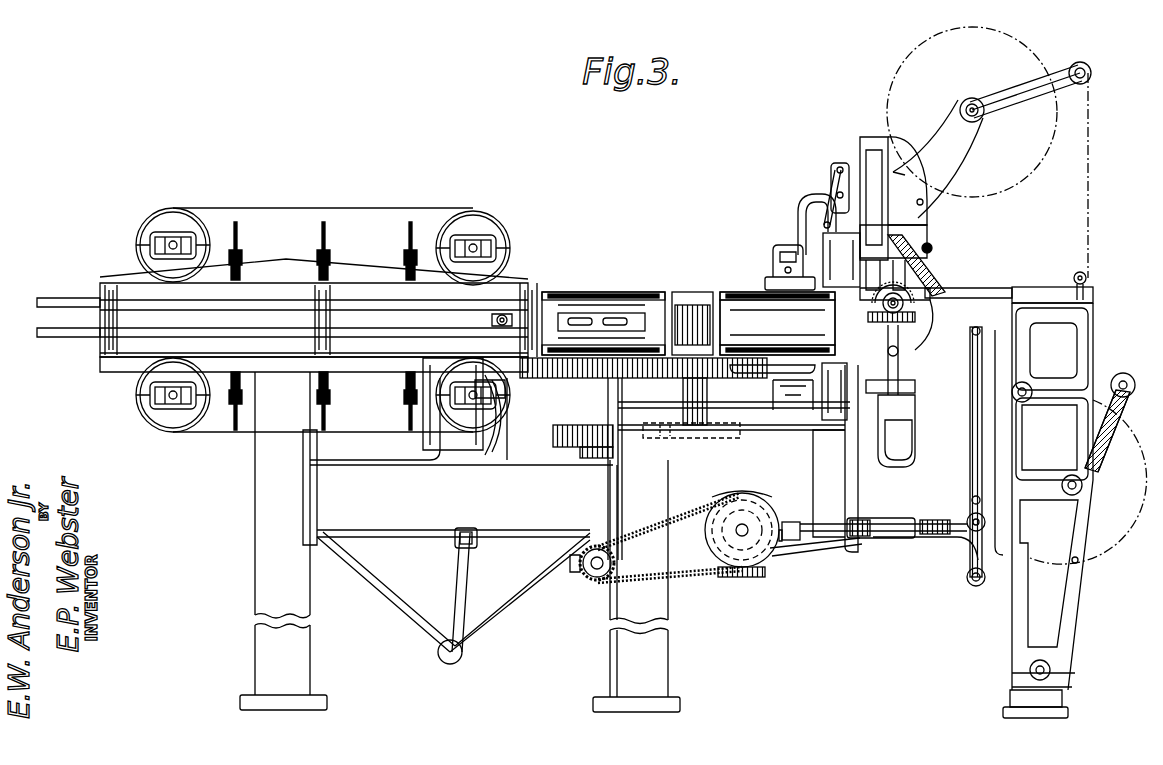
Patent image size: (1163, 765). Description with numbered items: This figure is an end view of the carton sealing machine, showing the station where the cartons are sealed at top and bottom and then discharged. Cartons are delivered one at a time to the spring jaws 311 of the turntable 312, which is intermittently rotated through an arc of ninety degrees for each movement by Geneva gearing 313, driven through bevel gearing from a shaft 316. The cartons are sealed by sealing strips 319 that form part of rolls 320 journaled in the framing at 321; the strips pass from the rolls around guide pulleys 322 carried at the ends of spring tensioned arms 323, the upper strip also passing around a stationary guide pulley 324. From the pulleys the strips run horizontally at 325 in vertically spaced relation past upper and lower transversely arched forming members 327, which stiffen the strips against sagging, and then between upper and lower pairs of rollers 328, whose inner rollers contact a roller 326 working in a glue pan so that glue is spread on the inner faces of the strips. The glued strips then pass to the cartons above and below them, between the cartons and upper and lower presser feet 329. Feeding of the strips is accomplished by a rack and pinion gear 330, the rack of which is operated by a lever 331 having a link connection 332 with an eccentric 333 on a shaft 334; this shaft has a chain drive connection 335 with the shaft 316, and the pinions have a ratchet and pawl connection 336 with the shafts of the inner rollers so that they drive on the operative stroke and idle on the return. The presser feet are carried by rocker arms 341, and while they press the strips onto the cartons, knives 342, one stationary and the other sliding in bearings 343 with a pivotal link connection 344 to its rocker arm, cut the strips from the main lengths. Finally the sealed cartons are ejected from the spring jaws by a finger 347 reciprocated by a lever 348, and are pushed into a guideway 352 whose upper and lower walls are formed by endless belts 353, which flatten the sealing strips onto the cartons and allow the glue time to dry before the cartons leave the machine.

The spring jaws 311 is at (596, 292).
The turntable 312 is at (695, 290).
The Geneva gearing 313 is at (640, 428).
The shaft 316 is at (592, 580).
The sealing strips 319 is at (1088, 172).
The rolls 320 is at (1017, 295).
The journal 321 is at (960, 105).
The guide pulleys 322 is at (1118, 478).
The spring tensioned arms 323 is at (1090, 438).
The stationary guide pulley 324 is at (1076, 273).
The horizontal feed path 325 is at (1012, 285).
The roller 326 is at (945, 290).
The transversely arched forming members 327 is at (942, 285).
The rollers 328 is at (838, 312).
The presser feet 329 is at (755, 280).
The rack and pinion gear 330 is at (890, 312).
The lever 331 is at (968, 420).
The link connection 332 is at (928, 522).
The eccentric 333 is at (777, 560).
The shaft 334 is at (738, 540).
The chain drive connection 335 is at (695, 505).
The ratchet and pawl connection 336 is at (905, 290).
The rocker arms 341 is at (800, 237).
The knives 342 is at (823, 250).
The bearings 343 is at (822, 220).
The pivotal link connection 344 is at (830, 190).
The finger 347 is at (640, 305).
The lever 348 is at (475, 567).
The guideway 352 is at (287, 315).
The endless belts 353 is at (395, 209).